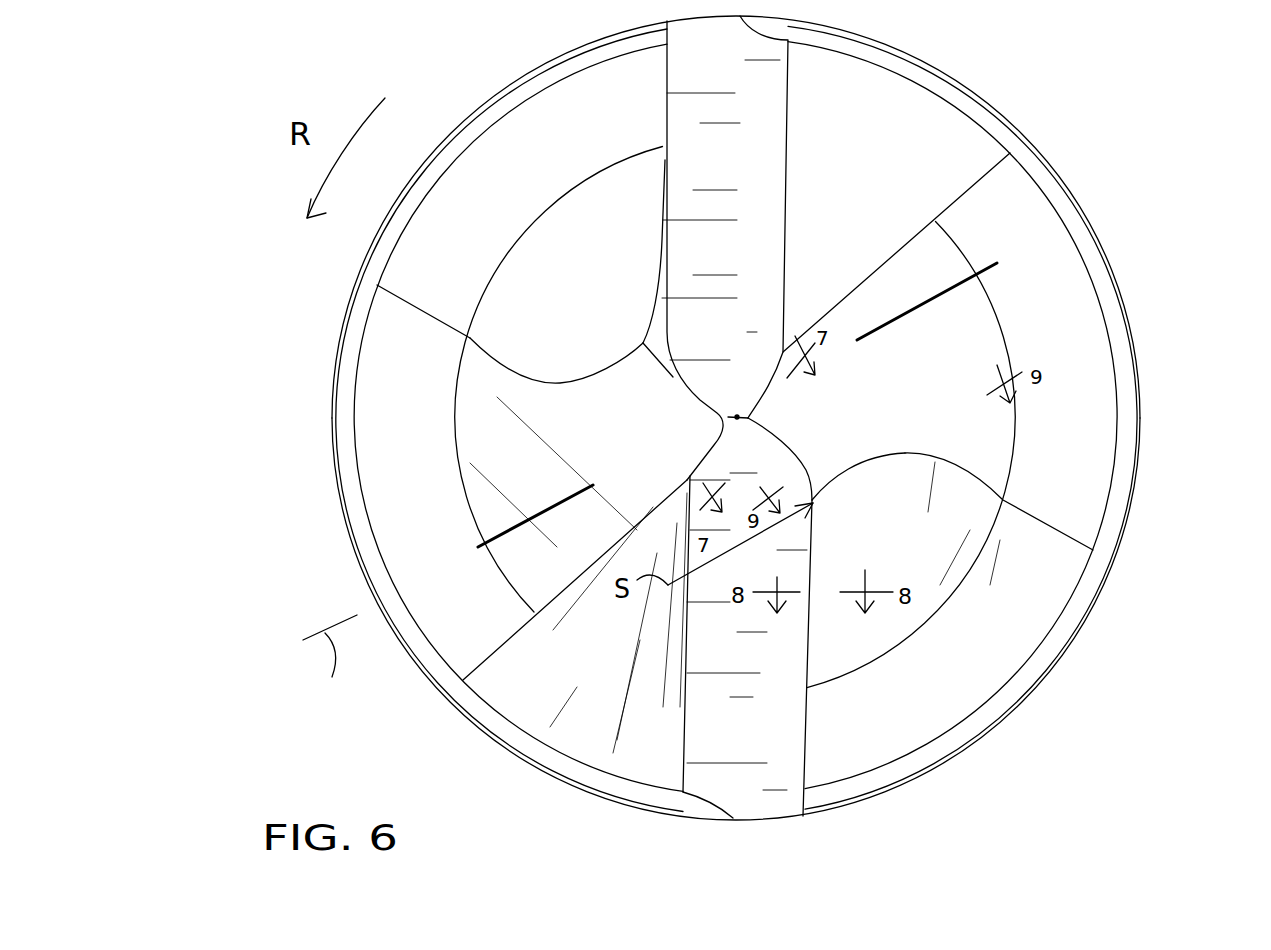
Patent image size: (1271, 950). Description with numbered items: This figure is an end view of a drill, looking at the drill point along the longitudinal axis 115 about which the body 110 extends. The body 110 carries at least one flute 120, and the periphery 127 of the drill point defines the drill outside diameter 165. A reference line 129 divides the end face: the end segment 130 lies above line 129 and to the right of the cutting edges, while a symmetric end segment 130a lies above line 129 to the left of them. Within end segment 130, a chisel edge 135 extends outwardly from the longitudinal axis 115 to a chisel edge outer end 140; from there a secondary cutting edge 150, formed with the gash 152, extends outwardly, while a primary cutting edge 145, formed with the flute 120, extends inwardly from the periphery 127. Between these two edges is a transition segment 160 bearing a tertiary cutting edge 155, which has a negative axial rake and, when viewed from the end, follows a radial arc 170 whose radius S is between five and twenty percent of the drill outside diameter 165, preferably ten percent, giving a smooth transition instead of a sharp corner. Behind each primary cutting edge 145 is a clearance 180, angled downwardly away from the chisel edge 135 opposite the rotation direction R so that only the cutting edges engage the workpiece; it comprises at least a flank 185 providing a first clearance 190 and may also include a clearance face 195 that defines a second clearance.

The body 110 is at (1100, 207).
The longitudinal axis 115 is at (733, 410).
The flute 120 is at (940, 573).
The periphery 127 is at (1015, 705).
The line 129 is at (330, 670).
The end segment 130 is at (1065, 478).
The end segment 130a is at (390, 478).
The chisel edge 135 is at (748, 415).
The chisel edge outer end 140 is at (755, 420).
The primary cutting edge 145 is at (808, 715).
The secondary cutting edge 150 is at (800, 460).
The gash 152 is at (1087, 333).
The tertiary cutting edge 155 is at (813, 522).
The transition segment 160 is at (830, 496).
The drill outside diameter 165 is at (318, 418).
The radial arc 170 is at (807, 483).
The clearance 180 is at (783, 775).
The flank 185 is at (717, 773).
The first clearance 190 is at (743, 798).
The clearance face 195 is at (590, 732).